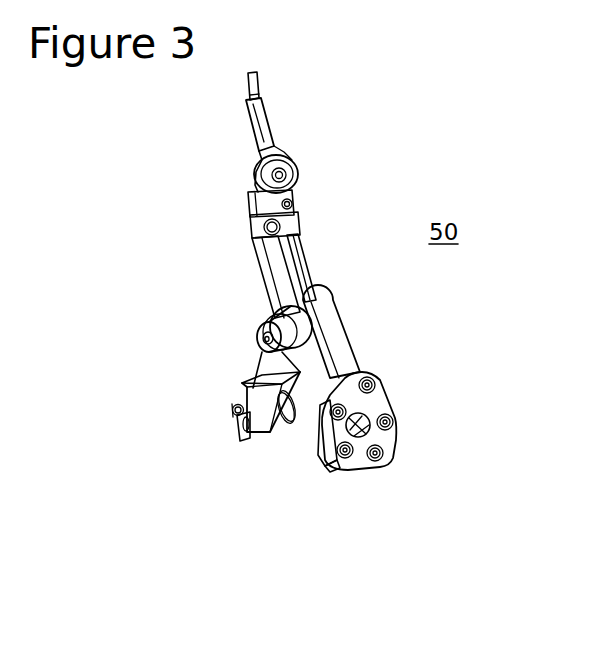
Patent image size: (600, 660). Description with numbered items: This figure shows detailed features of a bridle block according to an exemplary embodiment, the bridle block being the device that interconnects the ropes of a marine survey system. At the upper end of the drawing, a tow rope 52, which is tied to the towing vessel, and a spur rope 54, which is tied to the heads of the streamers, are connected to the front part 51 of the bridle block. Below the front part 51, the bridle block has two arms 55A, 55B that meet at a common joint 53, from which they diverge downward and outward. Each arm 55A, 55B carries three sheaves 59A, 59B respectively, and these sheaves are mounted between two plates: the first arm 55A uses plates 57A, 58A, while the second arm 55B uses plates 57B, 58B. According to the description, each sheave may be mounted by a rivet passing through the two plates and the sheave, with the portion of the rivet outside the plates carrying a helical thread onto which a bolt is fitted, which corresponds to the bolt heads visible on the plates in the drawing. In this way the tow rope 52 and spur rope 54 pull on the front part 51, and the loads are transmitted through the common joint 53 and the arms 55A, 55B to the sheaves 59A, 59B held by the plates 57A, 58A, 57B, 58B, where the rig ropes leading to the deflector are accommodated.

The front part 51 is at (302, 260).
The tow rope 52 is at (263, 120).
The common joint 53 is at (258, 329).
The spur rope 54 is at (250, 200).
The arm 55A is at (267, 368).
The arm 55B is at (343, 353).
The plate 57A is at (246, 398).
The plate 57B is at (380, 408).
The plate 58A is at (273, 432).
The plate 58B is at (310, 445).
The sheaves 59A is at (250, 431).
The sheaves 59B is at (328, 468).